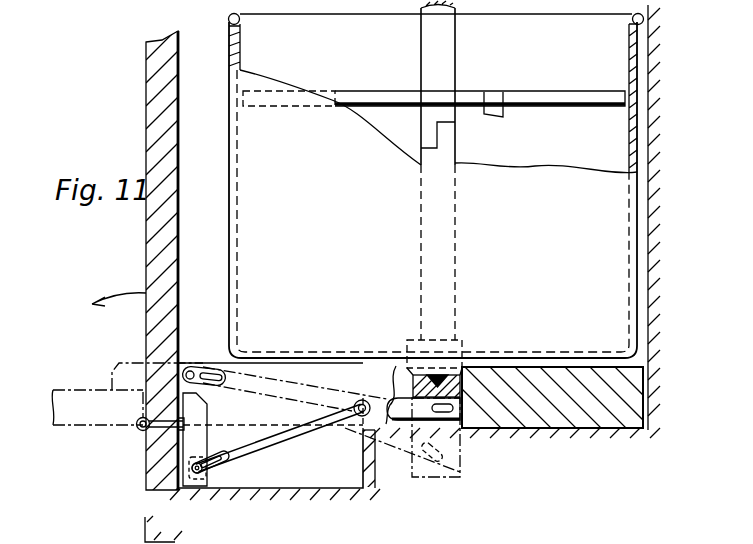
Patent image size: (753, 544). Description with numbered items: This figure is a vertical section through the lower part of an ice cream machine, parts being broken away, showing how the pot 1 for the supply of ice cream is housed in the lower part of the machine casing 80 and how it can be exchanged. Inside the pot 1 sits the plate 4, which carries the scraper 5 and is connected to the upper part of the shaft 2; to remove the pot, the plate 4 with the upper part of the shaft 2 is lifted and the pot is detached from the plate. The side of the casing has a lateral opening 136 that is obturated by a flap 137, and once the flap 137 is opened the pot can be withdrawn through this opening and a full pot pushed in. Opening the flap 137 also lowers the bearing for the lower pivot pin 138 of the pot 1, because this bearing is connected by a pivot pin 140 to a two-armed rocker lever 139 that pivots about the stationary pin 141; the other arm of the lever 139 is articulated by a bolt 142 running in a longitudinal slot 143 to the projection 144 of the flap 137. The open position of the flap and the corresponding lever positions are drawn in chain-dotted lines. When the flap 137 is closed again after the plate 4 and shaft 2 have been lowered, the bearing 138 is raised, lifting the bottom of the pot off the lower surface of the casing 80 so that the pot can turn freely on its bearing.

The pot 1 is at (620, 243).
The shaft 2 is at (455, 39).
The plate 4 is at (594, 97).
The scraper 5 is at (498, 113).
The casing 80 is at (597, 420).
The lateral opening 136 is at (140, 429).
The flap 137 is at (150, 260).
The lower pivot pin bearing 138 is at (441, 380).
The two-armed rocker lever 139 is at (310, 431).
The pivot pin 140 is at (461, 424).
The stationary pin 141 is at (360, 400).
The bolt 142 is at (197, 475).
The longitudinal slot 143 is at (226, 462).
The projection 144 is at (195, 437).